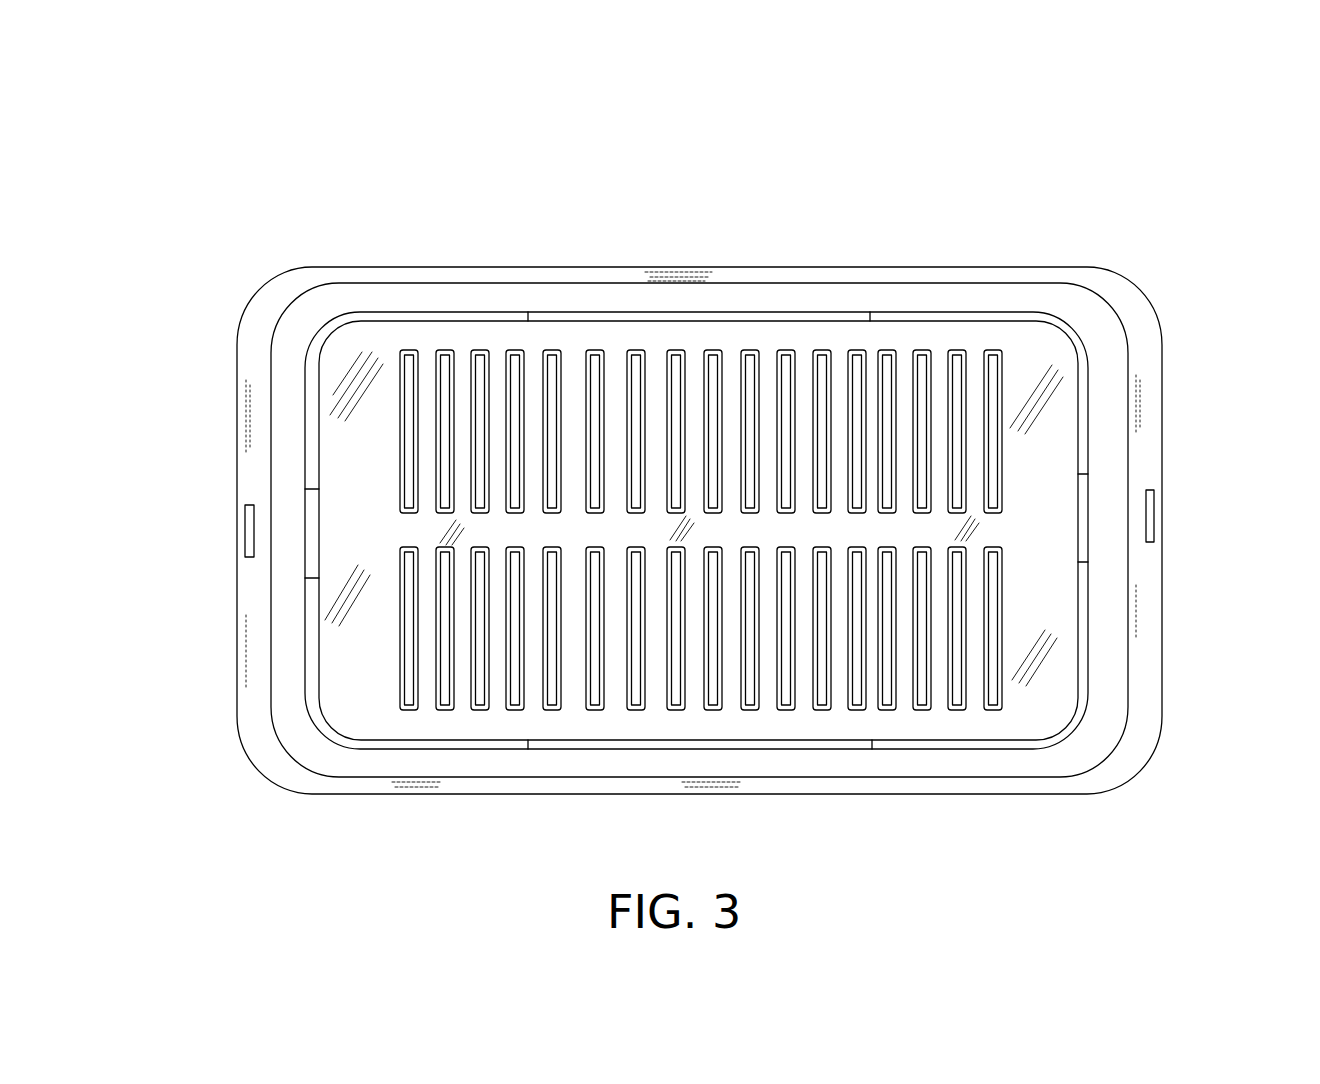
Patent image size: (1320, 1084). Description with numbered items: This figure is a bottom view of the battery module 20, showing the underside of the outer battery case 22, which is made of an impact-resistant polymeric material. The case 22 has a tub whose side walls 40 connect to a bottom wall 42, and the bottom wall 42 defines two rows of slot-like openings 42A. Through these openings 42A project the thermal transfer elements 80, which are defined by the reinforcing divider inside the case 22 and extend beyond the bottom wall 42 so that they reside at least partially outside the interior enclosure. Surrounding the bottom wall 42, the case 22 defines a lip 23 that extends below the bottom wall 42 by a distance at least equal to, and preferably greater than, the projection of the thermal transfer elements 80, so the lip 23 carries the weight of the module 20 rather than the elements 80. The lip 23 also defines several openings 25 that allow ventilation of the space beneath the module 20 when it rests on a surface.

The battery module 20 is at (388, 97).
The outer battery case 22 is at (1140, 294).
The lip 23 is at (332, 337).
The openings 25 is at (745, 313).
The side walls 40 is at (829, 300).
The bottom wall 42 is at (358, 686).
The openings 42A is at (552, 355).
The thermal transfer elements 80 is at (446, 358).